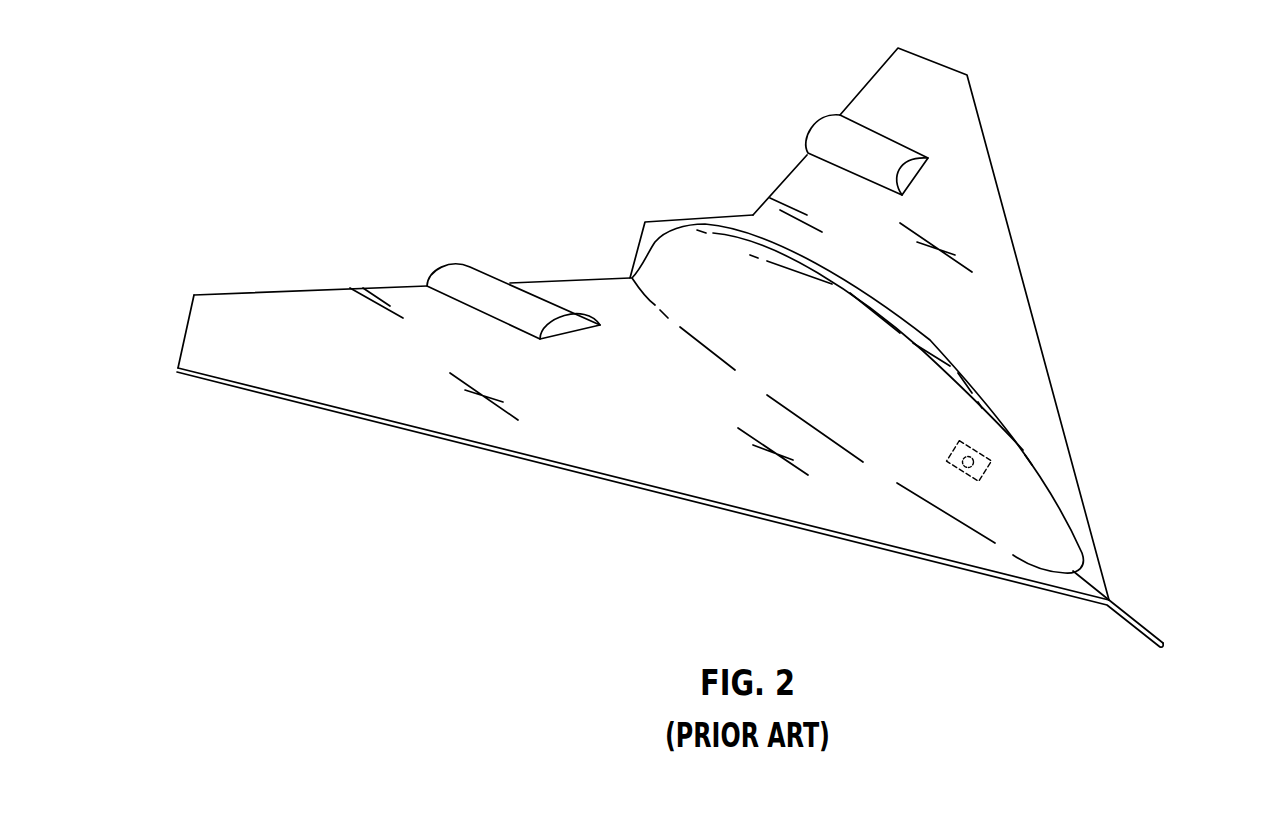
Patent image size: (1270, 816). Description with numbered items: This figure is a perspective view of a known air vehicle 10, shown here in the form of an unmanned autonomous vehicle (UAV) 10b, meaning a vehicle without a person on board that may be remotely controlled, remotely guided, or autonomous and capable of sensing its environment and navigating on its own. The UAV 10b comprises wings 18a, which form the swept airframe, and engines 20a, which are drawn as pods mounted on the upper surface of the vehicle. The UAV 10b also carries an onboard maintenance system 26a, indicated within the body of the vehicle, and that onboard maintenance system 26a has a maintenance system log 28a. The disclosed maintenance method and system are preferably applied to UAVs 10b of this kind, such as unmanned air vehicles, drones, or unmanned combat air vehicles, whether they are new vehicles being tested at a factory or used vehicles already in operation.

The air vehicle 10 is at (718, 347).
The unmanned autonomous vehicle (UAV) 10b is at (1128, 440).
The wings 18a is at (633, 463).
The engines 20a is at (483, 276).
The onboard maintenance system 26a is at (973, 493).
The maintenance system log 28a is at (965, 470).